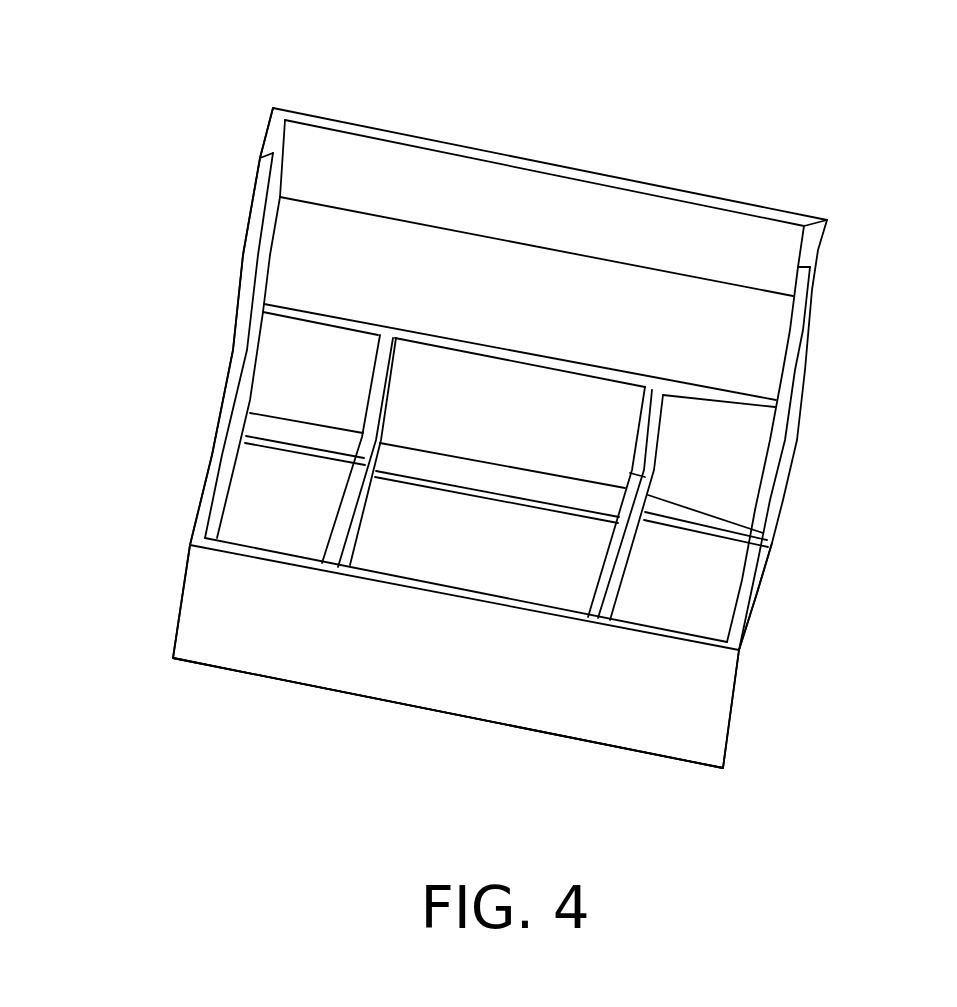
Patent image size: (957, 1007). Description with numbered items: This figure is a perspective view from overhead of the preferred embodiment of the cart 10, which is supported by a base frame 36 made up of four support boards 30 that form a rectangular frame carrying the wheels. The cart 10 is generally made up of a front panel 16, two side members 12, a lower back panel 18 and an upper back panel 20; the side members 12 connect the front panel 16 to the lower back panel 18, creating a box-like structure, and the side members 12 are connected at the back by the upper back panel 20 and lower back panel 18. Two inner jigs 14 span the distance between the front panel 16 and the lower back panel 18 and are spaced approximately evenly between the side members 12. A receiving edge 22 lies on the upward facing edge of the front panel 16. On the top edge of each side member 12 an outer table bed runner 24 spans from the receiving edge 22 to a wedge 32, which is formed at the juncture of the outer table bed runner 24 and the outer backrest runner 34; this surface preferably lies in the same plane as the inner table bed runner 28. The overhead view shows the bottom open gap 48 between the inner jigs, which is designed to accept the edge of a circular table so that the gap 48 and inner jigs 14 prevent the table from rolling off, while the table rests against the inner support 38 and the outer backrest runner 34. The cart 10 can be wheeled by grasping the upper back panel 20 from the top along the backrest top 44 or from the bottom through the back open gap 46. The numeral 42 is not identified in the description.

The cart 10 is at (150, 157).
The side member 12 is at (253, 325).
The inner jig 14 is at (623, 578).
The front panel 16 is at (375, 655).
The lower back panel 18 is at (718, 457).
The upper back panel 20 is at (507, 185).
The receiving edge 22 is at (620, 633).
The outer table bed runner 24 is at (203, 507).
The inner table bed runner 28 is at (338, 523).
The support board 30 is at (712, 517).
The wedge 32 is at (780, 528).
The outer backrest runner 34 is at (258, 232).
The base frame 36 is at (155, 733).
The inner support 38 is at (363, 435).
The upper left compartment 42 is at (375, 383).
The backrest top 44 is at (313, 118).
The back open gap 46 is at (663, 347).
The bottom open gap 48 is at (493, 545).